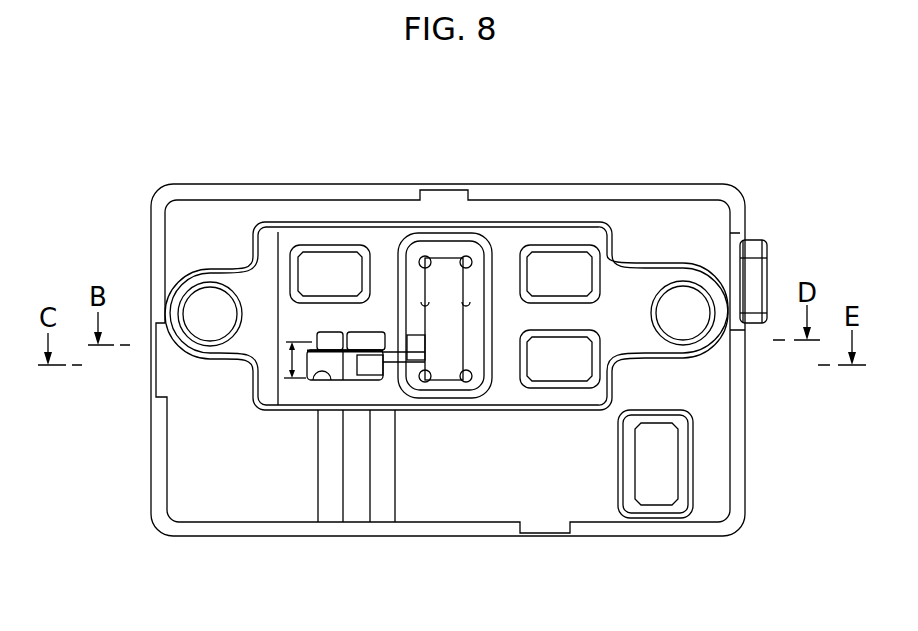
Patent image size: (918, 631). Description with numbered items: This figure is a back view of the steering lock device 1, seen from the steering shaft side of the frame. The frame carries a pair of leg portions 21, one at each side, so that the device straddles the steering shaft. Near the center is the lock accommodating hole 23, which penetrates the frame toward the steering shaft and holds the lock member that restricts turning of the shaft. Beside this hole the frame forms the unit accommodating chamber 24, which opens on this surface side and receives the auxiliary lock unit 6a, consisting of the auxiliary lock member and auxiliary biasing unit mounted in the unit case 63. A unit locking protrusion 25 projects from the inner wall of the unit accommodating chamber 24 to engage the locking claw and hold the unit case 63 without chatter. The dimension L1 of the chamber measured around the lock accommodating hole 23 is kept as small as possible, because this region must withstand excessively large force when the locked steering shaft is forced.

The steering lock device 1 is at (582, 118).
The leg portions 21 is at (220, 270).
The lock accommodating hole 23 is at (458, 283).
The unit accommodating chamber 24 is at (312, 374).
The unit locking protrusion 25 is at (345, 338).
The auxiliary lock unit 6a is at (352, 469).
The unit case 63 is at (352, 469).
The dimension L1 is at (258, 378).